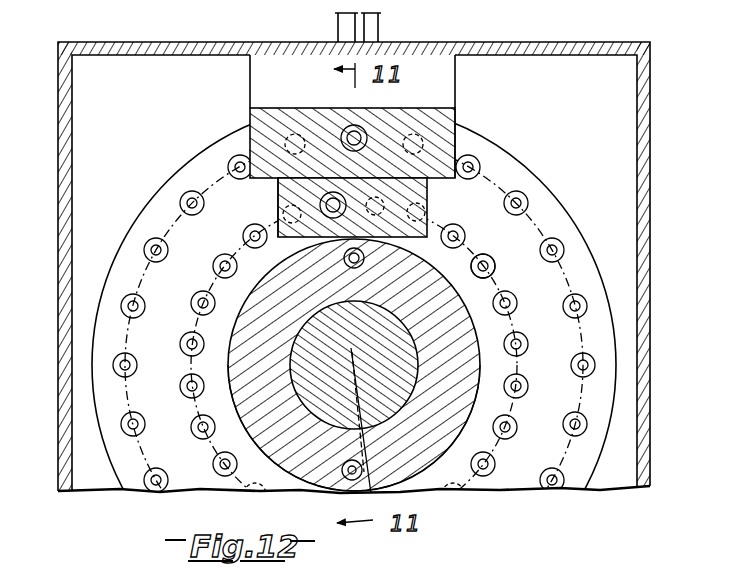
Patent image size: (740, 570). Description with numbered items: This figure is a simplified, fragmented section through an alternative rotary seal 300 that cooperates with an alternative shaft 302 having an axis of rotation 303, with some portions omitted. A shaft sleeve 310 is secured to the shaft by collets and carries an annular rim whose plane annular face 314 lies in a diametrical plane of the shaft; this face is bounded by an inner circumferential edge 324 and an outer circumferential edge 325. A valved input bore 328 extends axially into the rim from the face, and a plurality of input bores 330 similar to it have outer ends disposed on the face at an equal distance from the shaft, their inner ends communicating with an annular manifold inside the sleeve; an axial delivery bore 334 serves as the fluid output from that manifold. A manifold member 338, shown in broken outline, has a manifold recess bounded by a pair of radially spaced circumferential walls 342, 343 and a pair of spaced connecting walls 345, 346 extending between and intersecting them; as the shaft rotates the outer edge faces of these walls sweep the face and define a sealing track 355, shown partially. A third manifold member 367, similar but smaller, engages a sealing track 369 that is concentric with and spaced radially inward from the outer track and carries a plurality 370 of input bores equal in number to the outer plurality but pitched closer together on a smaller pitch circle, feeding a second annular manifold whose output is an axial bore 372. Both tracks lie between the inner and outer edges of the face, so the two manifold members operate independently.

The rotary seal 300 is at (710, 146).
The shaft 302 is at (345, 359).
The axis of rotation 303 is at (360, 352).
The shaft sleeve 310 is at (462, 407).
The annular face 314 is at (516, 246).
The inner circumferential edge 324 is at (242, 296).
The outer circumferential edge 325 is at (163, 189).
The input bore 328 is at (363, 128).
The plurality of input bores 330 is at (495, 181).
The axial delivery bore 334 is at (363, 263).
The manifold member 338 is at (457, 110).
The circumferential wall 342 is at (335, 104).
The circumferential wall 343 is at (277, 182).
The connecting wall 345 is at (247, 133).
The connecting wall 346 is at (458, 131).
The sealing track 355 is at (550, 214).
The third manifold member 367 is at (431, 198).
The sealing track 369 is at (525, 326).
The plurality of input bores 370 is at (500, 282).
The axial bore 372 is at (344, 465).